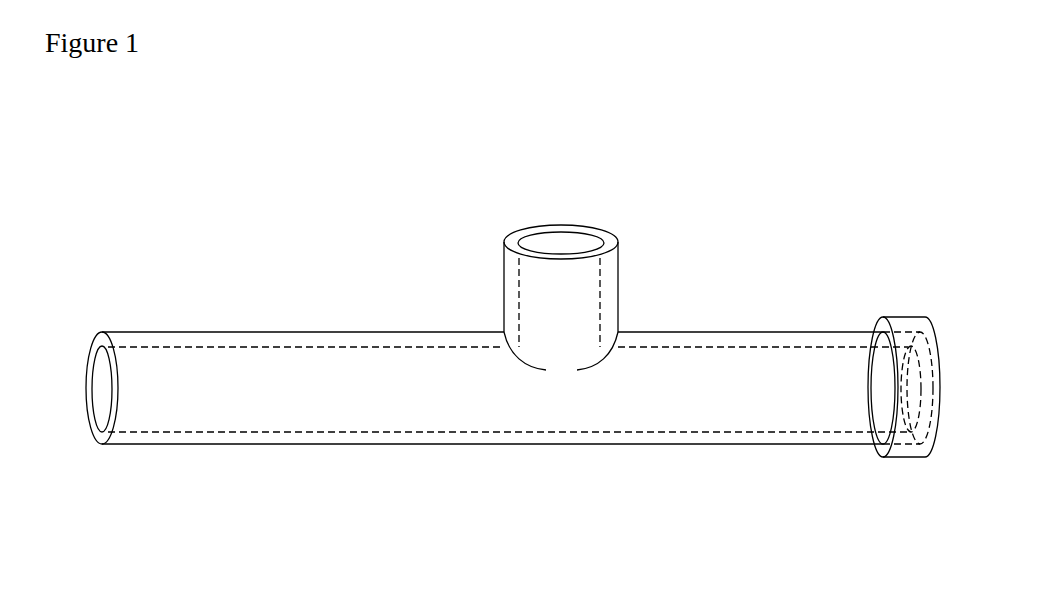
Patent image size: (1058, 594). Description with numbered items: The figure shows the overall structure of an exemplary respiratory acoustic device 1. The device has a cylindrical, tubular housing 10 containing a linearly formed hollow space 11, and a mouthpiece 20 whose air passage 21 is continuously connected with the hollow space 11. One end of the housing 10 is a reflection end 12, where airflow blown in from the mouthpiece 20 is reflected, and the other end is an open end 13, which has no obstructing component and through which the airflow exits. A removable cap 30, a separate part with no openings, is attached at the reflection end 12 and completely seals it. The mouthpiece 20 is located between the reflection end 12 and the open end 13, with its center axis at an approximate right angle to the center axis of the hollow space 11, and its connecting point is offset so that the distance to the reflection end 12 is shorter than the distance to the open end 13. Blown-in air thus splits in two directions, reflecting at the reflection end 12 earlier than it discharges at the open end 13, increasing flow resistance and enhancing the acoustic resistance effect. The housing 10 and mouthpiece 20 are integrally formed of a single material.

The respiratory acoustic device 1 is at (797, 256).
The housing 10 is at (298, 327).
The hollow space 11 is at (358, 433).
The reflection end 12 is at (929, 317).
The open end 13 is at (88, 345).
The mouthpiece 20 is at (488, 249).
The air passage 21 is at (564, 245).
The cap 30 is at (899, 462).